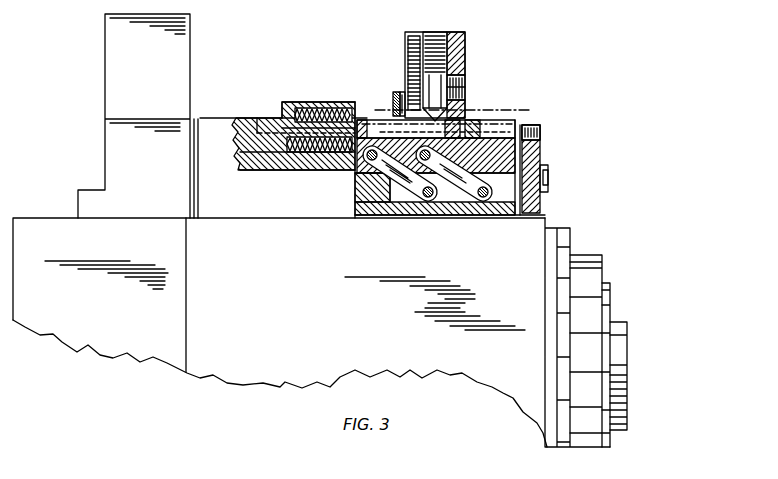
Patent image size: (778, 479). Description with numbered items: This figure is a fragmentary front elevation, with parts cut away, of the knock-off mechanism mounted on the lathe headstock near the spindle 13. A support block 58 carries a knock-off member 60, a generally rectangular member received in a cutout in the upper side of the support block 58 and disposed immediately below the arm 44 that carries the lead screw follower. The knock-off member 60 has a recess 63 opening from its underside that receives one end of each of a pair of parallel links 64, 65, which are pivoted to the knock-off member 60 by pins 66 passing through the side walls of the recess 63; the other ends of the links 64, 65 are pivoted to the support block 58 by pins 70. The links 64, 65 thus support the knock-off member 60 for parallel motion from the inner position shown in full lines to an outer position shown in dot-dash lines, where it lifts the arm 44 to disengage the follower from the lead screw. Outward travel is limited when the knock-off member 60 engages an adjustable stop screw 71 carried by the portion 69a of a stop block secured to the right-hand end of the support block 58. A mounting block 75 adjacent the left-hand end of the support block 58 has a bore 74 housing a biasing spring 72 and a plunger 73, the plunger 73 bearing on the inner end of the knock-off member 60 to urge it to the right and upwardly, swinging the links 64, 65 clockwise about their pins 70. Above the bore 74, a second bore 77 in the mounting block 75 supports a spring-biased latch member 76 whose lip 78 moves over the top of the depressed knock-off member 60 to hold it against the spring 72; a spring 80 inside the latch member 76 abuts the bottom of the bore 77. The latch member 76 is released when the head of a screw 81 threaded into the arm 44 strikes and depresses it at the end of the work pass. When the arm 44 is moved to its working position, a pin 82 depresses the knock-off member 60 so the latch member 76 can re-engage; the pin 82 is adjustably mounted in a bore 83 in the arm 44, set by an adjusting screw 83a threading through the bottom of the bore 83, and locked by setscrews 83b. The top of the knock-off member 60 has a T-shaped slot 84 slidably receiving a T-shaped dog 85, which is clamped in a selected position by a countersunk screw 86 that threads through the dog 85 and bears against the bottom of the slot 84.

The spindle 13 is at (612, 290).
The arm 44 is at (459, 25).
The support block 58 is at (357, 208).
The knock-off member 60 is at (525, 113).
The recess 63 is at (356, 181).
The link 64 is at (388, 218).
The link 65 is at (460, 214).
The pins 66 is at (416, 166).
The portion of stop block 69a is at (549, 166).
The pins 70 is at (426, 200).
The adjustable stop screw 71 is at (541, 133).
The biasing spring 72 is at (254, 170).
The plunger 73 is at (286, 172).
The bore 74 is at (257, 130).
The mounting block 75 is at (257, 212).
The latch member 76 is at (363, 122).
The bore 77 is at (318, 112).
The lip 78 is at (368, 126).
The spring 80 is at (330, 118).
The screw 81 is at (396, 92).
The pin 82 is at (465, 92).
The bore 83 is at (460, 56).
The adjusting screw 83a is at (432, 34).
The setscrews 83b is at (466, 80).
The T-shaped slot 84 is at (398, 134).
The T-shaped dog 85 is at (478, 118).
The screw 86 is at (453, 160).